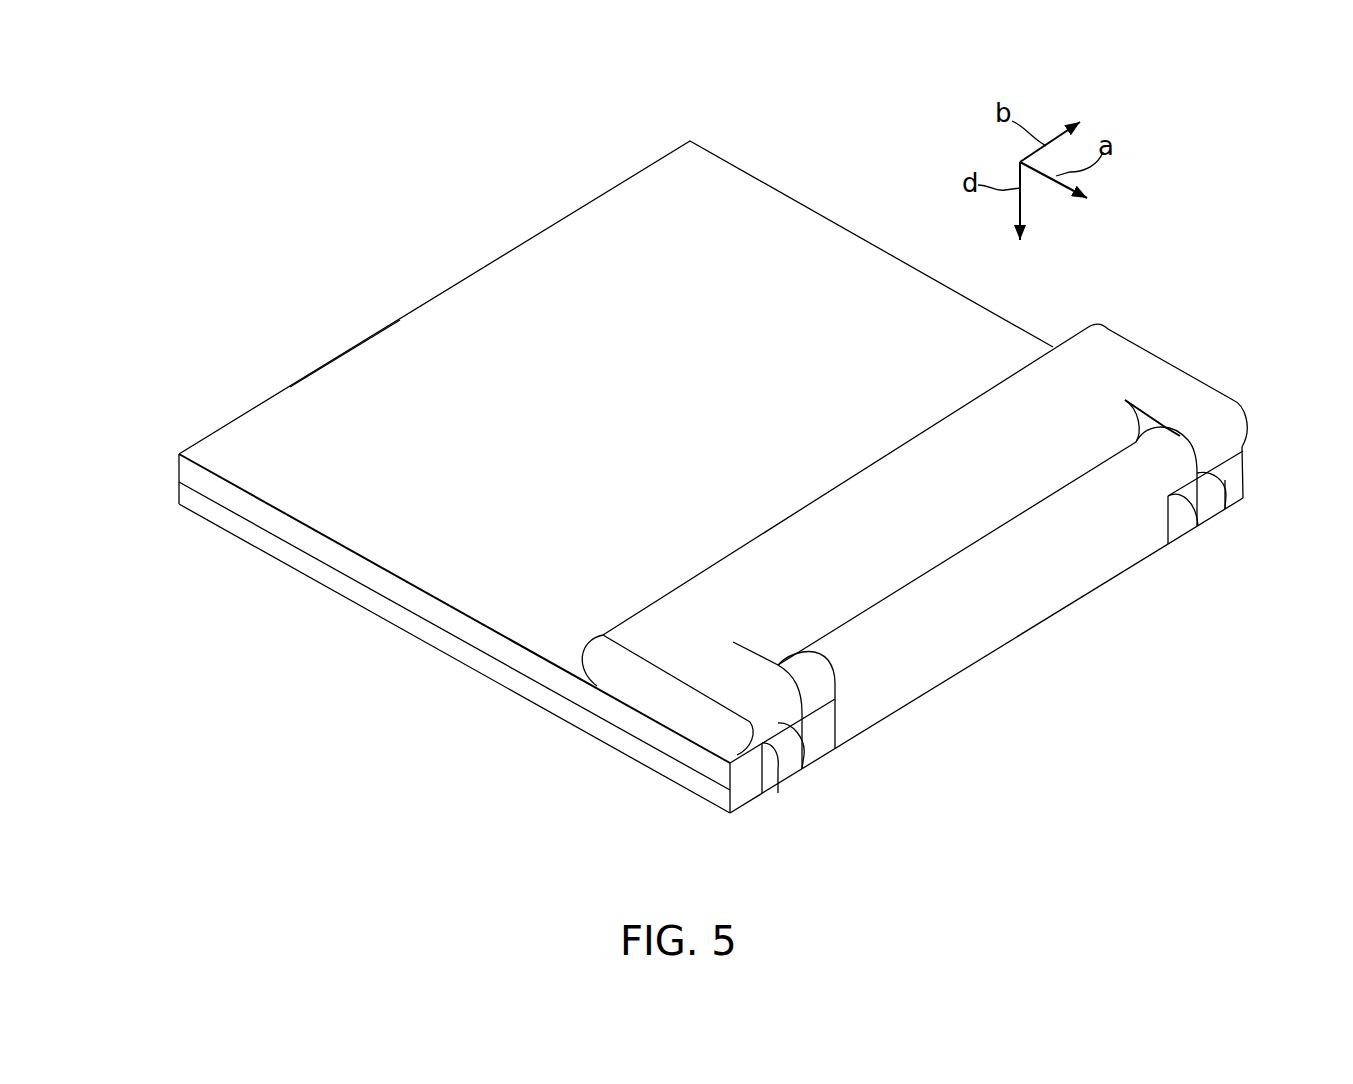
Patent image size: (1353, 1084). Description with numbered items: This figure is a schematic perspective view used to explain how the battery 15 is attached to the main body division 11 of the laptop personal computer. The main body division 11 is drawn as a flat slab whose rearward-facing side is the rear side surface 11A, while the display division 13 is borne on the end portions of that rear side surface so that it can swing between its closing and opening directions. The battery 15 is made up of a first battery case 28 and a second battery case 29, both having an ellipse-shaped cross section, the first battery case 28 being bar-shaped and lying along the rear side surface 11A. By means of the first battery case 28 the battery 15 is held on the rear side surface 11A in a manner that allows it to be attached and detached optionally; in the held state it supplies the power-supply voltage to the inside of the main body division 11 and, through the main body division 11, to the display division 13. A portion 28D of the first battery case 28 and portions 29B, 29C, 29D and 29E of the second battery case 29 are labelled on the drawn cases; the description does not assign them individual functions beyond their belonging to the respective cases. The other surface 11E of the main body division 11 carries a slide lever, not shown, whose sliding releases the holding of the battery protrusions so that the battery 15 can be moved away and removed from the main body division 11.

The main body division 11 is at (287, 490).
The rear side surface 11A is at (740, 768).
The other surface 11E is at (310, 417).
The display division 13 is at (290, 550).
The battery 15 is at (1173, 320).
The first battery case 28 is at (905, 688).
The roll outer surface 28D is at (1030, 587).
The second battery case 29 is at (1097, 350).
The sheet edge portion 29B is at (1197, 410).
The sheet fold portion 29C is at (737, 678).
The sheet edge portion 29D is at (1187, 367).
The sheet fold portion 29E is at (636, 681).